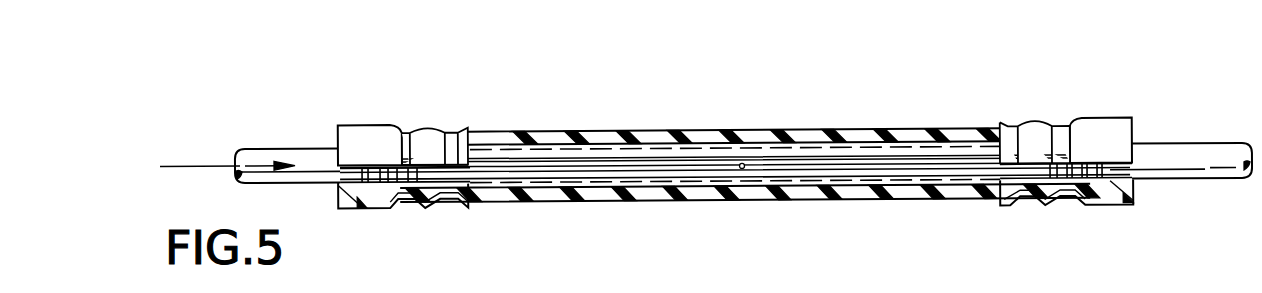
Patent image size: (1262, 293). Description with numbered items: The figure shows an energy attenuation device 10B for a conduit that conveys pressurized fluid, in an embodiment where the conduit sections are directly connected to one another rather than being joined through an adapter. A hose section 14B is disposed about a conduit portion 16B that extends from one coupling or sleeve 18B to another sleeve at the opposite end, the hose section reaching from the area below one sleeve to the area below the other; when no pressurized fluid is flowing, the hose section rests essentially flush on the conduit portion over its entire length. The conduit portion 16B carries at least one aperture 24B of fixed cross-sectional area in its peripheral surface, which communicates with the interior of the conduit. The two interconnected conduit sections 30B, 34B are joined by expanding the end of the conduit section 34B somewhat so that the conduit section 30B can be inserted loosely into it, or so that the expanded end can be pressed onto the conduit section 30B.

The energy attenuation device 10B is at (902, 97).
The hose section 14B is at (702, 190).
The conduit portion 16B is at (593, 168).
The coupling or sleeve 18B is at (388, 126).
The aperture 24B is at (748, 160).
The conduit section 30B is at (892, 172).
The conduit section 34B is at (1203, 175).